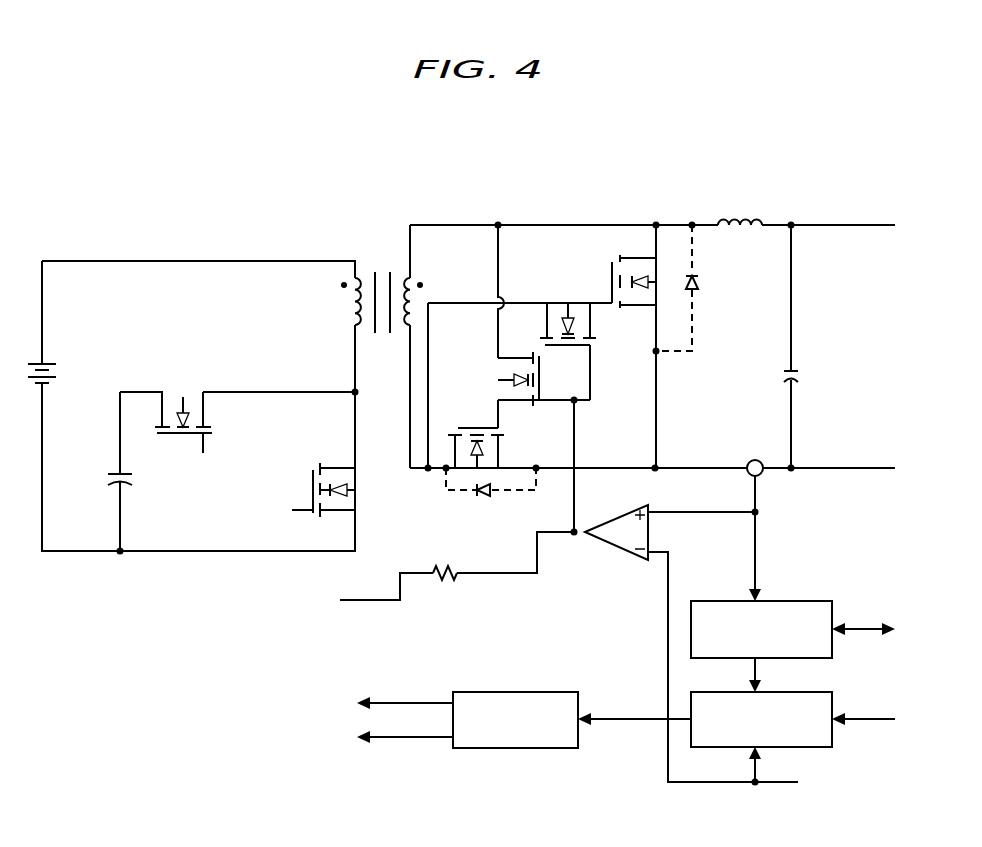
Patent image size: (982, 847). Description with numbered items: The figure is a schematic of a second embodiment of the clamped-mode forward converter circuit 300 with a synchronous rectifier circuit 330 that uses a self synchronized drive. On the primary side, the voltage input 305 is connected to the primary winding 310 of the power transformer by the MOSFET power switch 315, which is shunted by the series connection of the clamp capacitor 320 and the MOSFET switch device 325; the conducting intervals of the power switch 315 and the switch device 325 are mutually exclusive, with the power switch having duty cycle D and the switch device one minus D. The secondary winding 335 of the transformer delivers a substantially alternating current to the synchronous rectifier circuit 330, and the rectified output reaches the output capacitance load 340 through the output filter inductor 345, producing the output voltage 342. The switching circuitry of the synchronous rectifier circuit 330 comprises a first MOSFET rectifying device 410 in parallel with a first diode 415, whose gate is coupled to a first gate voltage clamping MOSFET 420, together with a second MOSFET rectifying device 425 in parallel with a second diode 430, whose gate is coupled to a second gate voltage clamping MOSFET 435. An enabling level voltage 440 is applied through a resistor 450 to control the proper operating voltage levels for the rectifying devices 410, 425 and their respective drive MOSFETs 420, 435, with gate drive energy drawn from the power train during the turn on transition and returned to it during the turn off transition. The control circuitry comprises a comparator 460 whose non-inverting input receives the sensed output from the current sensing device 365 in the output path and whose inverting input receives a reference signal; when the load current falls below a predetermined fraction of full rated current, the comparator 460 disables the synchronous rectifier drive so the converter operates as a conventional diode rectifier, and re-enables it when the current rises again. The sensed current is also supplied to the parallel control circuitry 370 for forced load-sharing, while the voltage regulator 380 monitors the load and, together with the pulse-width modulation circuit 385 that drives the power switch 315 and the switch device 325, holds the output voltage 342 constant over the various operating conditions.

The clamped-mode forward converter circuit 300 is at (192, 302).
The voltage input 305 is at (62, 374).
The primary winding 310 is at (349, 312).
The MOSFET power switch 315 is at (336, 454).
The clamp capacitor 320 is at (112, 483).
The MOSFET switch device 325 is at (195, 375).
The synchronous rectifier circuit 330 is at (638, 453).
The secondary winding 335 is at (422, 272).
The output capacitance load 340 is at (812, 368).
The output voltage 342 is at (830, 198).
The output filter inductor 345 is at (715, 200).
The current sensing device 365 is at (747, 463).
The parallel control circuitry 370 is at (800, 599).
The voltage regulator 380 is at (817, 750).
The pulse-width modulation circuit 385 is at (515, 750).
The MOSFET rectifying device 410 is at (549, 438).
The diode 415 is at (469, 502).
The gate voltage clamping MOSFET 420 is at (468, 358).
The MOSFET rectifying device 425 is at (633, 352).
The diode 430 is at (706, 295).
The gate voltage clamping MOSFET 435 is at (584, 262).
The enabling level voltage 440 is at (332, 590).
The resistor 450 is at (456, 568).
The comparator 460 is at (613, 594).